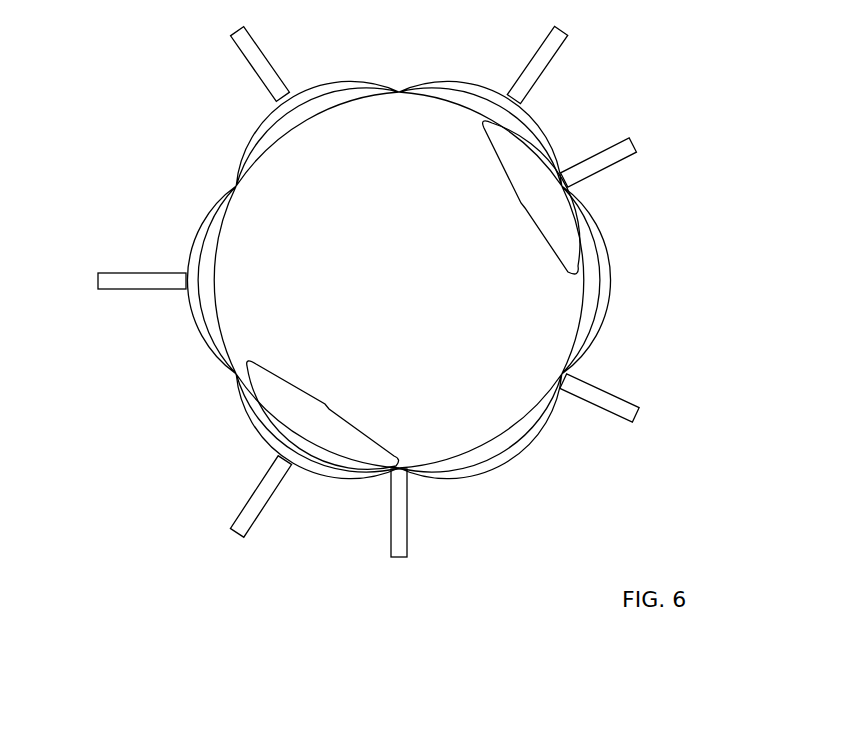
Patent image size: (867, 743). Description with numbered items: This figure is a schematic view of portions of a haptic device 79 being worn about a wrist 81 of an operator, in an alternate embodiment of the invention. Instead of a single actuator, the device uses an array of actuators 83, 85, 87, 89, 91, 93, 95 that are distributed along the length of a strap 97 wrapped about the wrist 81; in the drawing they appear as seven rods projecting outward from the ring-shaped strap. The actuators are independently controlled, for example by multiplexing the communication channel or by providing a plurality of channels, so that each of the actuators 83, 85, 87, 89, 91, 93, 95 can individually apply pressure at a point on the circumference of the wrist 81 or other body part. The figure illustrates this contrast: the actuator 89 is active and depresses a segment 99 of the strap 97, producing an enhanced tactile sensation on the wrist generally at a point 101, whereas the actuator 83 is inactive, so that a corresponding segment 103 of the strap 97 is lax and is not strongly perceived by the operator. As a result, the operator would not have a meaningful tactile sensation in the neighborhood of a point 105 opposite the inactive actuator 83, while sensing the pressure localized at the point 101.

The haptic device 79 is at (64, 80).
The wrist 81 is at (330, 467).
The actuator 83 is at (262, 513).
The actuator 85 is at (408, 528).
The actuator 87 is at (641, 417).
The actuator 89 is at (631, 160).
The actuator 91 is at (558, 59).
The actuator 93 is at (249, 69).
The actuator 95 is at (122, 271).
The strap 97 is at (210, 208).
The segment of the strap 99 is at (523, 206).
The point 101 is at (556, 375).
The segment of the strap 103 is at (327, 407).
The point 105 is at (267, 421).